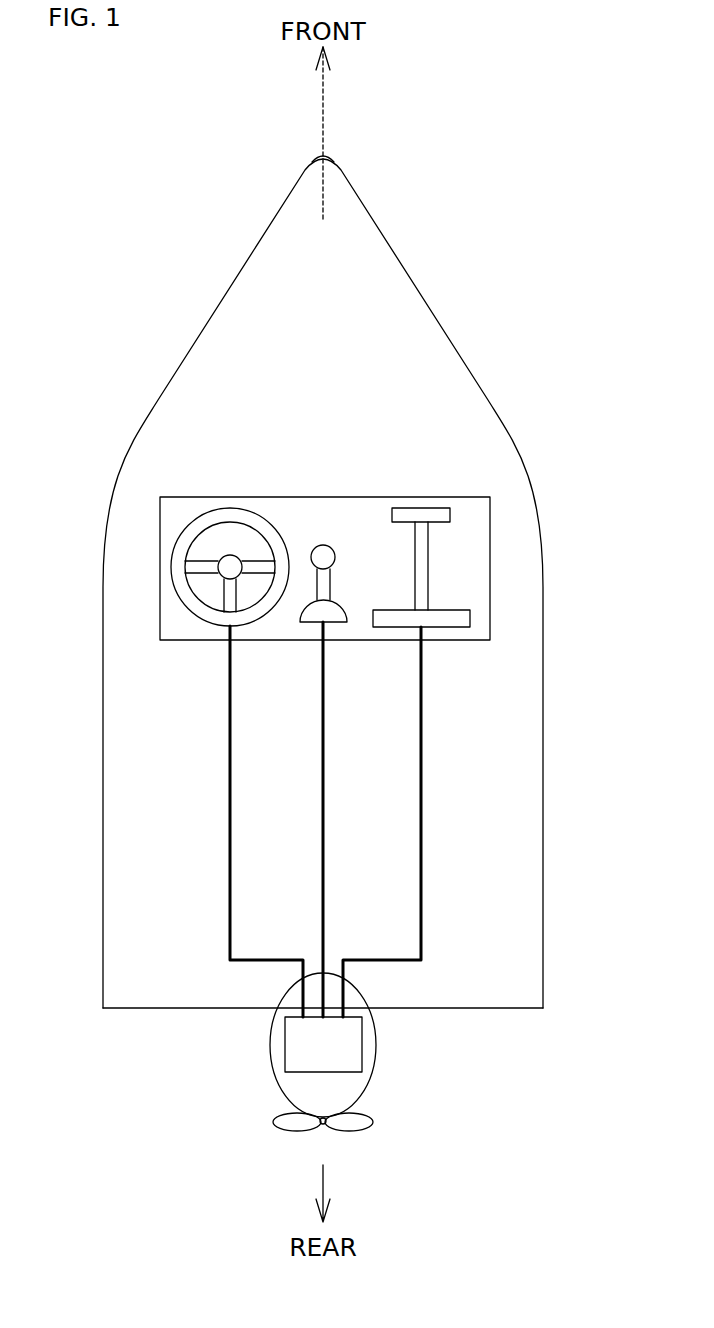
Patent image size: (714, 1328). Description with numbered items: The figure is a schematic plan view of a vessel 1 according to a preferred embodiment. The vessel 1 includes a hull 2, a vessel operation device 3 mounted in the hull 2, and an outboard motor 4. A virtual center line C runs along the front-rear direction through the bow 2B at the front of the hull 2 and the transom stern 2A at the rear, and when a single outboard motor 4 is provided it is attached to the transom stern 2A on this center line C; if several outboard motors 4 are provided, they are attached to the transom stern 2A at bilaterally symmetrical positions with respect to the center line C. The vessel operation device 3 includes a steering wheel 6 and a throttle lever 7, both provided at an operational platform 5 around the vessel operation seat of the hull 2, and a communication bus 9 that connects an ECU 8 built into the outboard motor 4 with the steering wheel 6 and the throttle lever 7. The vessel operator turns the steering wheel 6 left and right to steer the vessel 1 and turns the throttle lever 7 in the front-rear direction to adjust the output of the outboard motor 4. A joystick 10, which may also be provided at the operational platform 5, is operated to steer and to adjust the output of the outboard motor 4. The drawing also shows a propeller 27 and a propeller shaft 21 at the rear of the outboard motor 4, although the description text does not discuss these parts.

The vessel 1 is at (511, 299).
The hull 2 is at (138, 437).
The transom stern 2A is at (190, 1010).
The bow 2B is at (320, 161).
The vessel operation device 3 is at (511, 566).
The outboard motor 4 is at (268, 1084).
The operational platform 5 is at (360, 507).
The steering wheel 6 is at (230, 510).
The throttle lever 7 is at (432, 510).
The ECU 8 is at (353, 1058).
The communication bus 9 is at (228, 824).
The joystick 10 is at (323, 546).
The propeller shaft 21 is at (325, 1124).
The propeller 27 is at (287, 1127).
The center line C is at (325, 135).